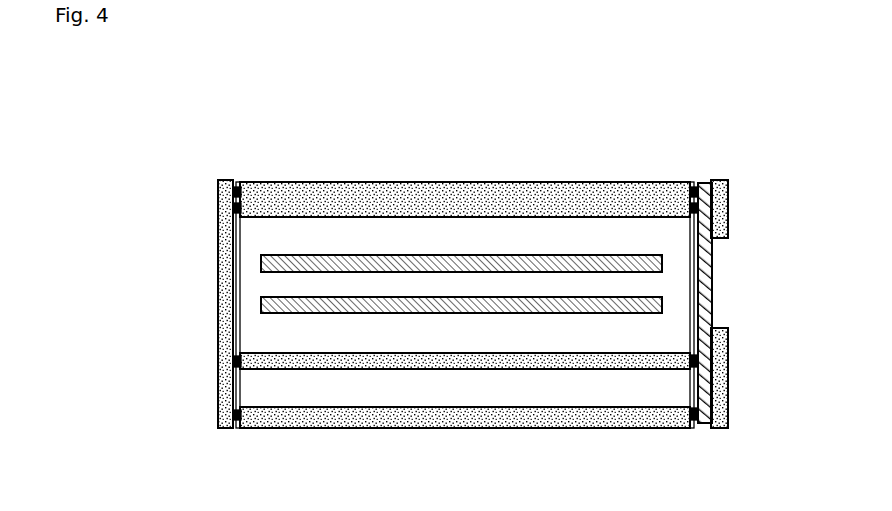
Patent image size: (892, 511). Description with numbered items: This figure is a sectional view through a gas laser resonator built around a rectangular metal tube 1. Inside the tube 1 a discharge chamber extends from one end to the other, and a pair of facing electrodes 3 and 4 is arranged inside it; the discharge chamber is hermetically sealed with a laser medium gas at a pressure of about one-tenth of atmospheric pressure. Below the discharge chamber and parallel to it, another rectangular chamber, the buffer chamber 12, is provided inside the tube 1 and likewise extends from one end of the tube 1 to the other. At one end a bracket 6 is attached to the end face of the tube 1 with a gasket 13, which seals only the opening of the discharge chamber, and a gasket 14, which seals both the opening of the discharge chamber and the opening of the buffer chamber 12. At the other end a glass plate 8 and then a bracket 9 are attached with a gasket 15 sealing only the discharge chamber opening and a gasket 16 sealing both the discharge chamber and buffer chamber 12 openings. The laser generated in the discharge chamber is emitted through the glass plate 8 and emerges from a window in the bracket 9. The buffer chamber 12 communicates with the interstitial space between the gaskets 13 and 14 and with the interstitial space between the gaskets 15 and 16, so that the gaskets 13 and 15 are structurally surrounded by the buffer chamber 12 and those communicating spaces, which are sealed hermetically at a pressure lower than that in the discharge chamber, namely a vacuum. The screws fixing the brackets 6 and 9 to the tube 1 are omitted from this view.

The rectangular metal tube 1 is at (383, 182).
The electrode 3 is at (598, 262).
The electrode 4 is at (470, 305).
The bracket 6 is at (217, 250).
The glass plate 8 is at (712, 282).
The bracket 9 is at (728, 205).
The buffer chamber 12 is at (375, 392).
The gasket 13 is at (216, 188).
The gasket 14 is at (247, 182).
The gasket 15 is at (689, 205).
The gasket 16 is at (690, 186).